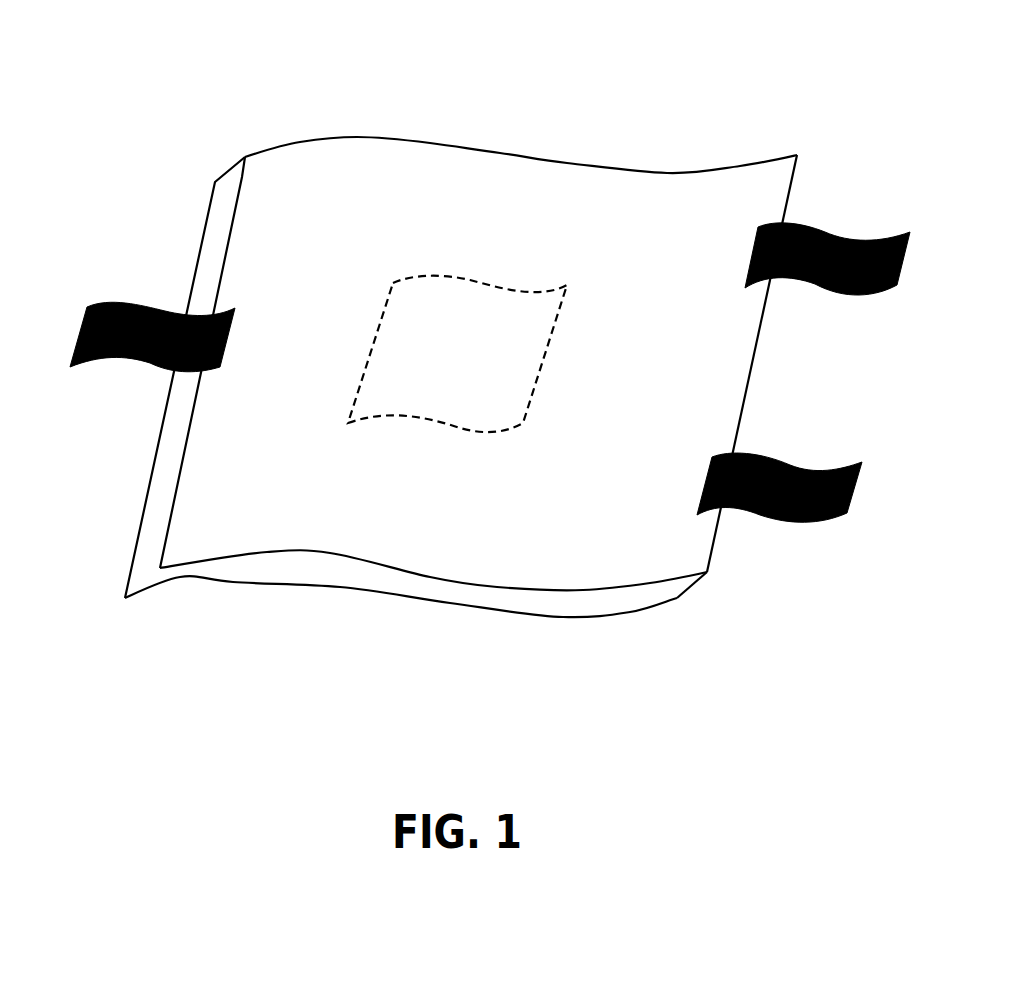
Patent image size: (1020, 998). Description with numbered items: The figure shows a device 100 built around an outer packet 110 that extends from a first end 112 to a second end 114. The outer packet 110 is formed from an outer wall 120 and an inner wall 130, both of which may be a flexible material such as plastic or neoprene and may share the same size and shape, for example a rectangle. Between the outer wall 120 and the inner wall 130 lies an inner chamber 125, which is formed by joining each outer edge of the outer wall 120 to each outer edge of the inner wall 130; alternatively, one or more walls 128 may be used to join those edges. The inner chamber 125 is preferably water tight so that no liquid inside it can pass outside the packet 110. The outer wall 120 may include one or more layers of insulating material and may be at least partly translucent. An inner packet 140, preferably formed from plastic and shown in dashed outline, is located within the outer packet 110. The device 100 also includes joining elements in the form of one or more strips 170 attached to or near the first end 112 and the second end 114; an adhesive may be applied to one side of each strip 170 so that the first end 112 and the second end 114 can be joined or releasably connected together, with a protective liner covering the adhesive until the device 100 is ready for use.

The device 100 is at (485, 40).
The outer packet 110 is at (565, 162).
The first end 112 is at (708, 550).
The second end 114 is at (213, 230).
The outer wall 120 is at (368, 207).
The inner chamber 125 is at (667, 225).
The walls 128 is at (355, 622).
The inner wall 130 is at (368, 593).
The inner packet 140 is at (457, 400).
The strips 170 is at (147, 367).